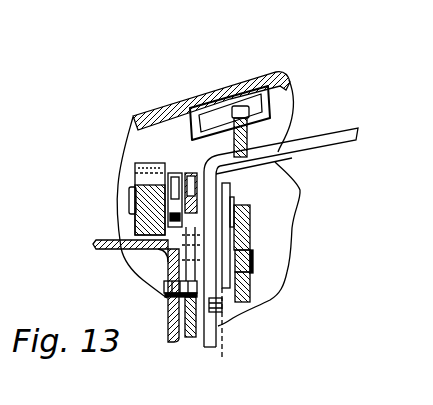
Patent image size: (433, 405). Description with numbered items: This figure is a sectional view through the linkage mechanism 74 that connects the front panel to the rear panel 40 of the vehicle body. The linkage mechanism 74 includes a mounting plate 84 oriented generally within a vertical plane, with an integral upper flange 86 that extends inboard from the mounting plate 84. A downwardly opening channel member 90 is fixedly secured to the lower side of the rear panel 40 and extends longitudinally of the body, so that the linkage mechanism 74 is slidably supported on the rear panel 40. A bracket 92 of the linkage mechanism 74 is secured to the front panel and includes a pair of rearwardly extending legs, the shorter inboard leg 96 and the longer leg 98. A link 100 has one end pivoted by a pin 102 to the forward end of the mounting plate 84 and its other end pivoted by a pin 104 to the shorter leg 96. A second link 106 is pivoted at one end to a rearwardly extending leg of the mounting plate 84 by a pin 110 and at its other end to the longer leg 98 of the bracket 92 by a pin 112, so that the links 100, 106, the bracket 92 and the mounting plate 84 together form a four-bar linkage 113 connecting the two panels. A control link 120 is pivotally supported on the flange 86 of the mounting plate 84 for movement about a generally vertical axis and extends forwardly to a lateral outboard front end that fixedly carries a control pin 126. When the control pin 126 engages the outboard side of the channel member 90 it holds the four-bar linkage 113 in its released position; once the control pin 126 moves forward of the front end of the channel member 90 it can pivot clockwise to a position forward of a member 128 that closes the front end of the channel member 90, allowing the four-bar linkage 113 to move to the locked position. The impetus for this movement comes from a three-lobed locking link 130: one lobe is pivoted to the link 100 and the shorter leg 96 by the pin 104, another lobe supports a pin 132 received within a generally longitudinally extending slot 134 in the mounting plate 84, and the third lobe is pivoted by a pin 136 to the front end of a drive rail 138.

The rear panel 40 is at (252, 78).
The linkage mechanism 74 is at (262, 302).
The mounting plate 84 is at (218, 186).
The upper flange 86 is at (270, 133).
The channel member 90 is at (273, 99).
The bracket 92 is at (249, 230).
The inboard leg 96 is at (131, 207).
The longer leg 98 is at (249, 246).
The link 100 is at (180, 176).
The pin 102 is at (197, 163).
The pin 104 is at (135, 193).
The second link 106 is at (228, 212).
The pin 110 is at (233, 200).
The pin 112 is at (252, 260).
The four-bar linkage 113 is at (255, 276).
The control link 120 is at (340, 129).
The control pin 126 is at (239, 106).
The member 128 is at (213, 112).
The locking link 130 is at (195, 326).
The pin 132 is at (223, 308).
The slot 134 is at (222, 348).
The pin 136 is at (165, 287).
The drive rail 138 is at (95, 245).